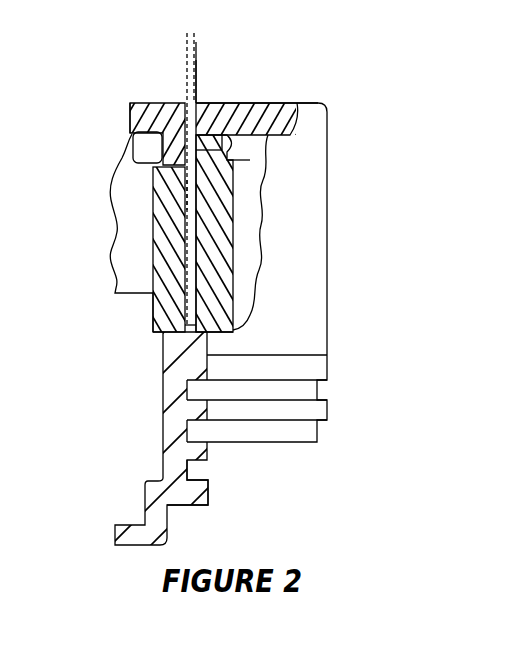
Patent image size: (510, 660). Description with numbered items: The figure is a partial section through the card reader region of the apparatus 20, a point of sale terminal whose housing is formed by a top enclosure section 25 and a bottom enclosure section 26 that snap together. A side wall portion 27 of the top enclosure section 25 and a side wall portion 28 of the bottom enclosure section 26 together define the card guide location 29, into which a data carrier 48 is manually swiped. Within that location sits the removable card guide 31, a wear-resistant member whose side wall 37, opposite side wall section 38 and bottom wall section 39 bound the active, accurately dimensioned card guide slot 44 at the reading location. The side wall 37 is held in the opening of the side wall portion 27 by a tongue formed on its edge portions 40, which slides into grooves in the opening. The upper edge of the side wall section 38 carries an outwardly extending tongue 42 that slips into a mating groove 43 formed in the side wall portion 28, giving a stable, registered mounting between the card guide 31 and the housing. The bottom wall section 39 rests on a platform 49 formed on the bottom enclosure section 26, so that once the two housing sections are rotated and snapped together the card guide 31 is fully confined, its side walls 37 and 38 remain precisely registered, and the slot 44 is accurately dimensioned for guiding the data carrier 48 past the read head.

The apparatus 20 is at (333, 232).
The top enclosure section 25 is at (158, 97).
The bottom enclosure section 26 is at (196, 455).
The side wall portion 27 is at (168, 121).
The side wall portion 28 is at (227, 120).
The guide slot location 29 is at (197, 103).
The card guide 31 is at (166, 293).
The side wall 37 is at (158, 239).
The side wall section 38 is at (221, 231).
The bottom wall section 39 is at (186, 320).
The edge portions 40 is at (165, 165).
The tongue 42 is at (208, 143).
The groove 43 is at (214, 142).
The card guide slot 44 is at (201, 196).
The data carrier 48 is at (196, 42).
The platform 49 is at (162, 362).